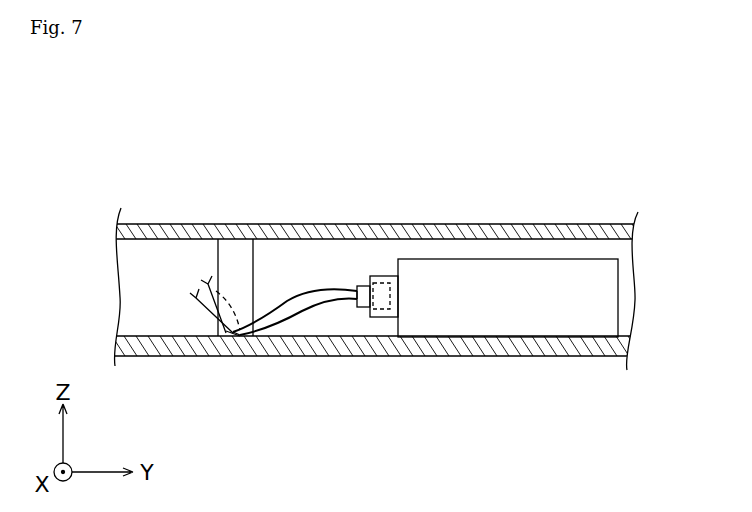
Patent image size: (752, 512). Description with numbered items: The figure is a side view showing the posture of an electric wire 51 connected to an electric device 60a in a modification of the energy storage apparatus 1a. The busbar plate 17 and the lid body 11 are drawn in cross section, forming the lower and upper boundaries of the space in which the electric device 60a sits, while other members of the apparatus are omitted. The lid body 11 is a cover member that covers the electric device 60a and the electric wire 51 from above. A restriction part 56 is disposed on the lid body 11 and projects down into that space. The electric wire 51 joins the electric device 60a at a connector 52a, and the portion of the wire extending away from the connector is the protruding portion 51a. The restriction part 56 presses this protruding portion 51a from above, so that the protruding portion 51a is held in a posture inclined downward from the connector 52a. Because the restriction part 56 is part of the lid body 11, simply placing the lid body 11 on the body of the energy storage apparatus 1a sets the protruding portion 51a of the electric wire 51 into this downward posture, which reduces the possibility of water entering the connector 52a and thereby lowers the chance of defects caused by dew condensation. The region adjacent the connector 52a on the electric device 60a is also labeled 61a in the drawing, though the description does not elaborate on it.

The energy storage apparatus 1a is at (646, 128).
The lid body 11 is at (497, 232).
The busbar plate 17 is at (464, 357).
The electric wire 51 is at (211, 288).
The protruding portion 51a is at (250, 314).
The connector 52a is at (360, 286).
The restriction part 56 is at (235, 253).
The electric device 60a is at (553, 259).
The terminal box 61a is at (383, 276).